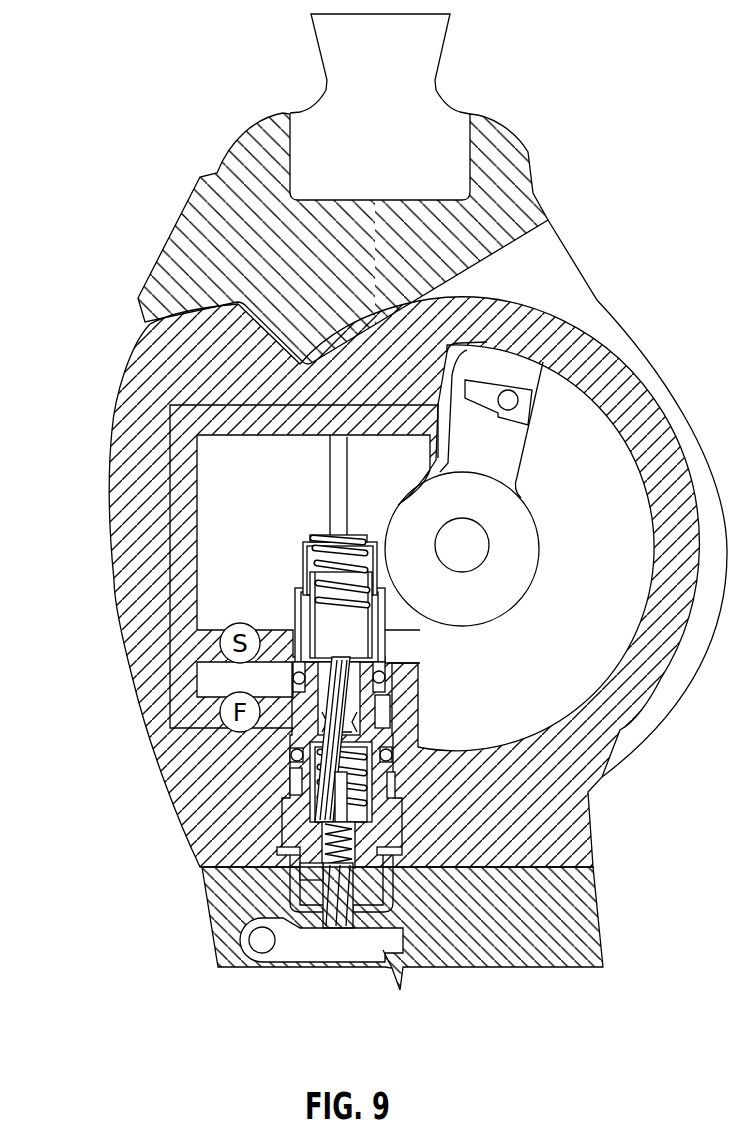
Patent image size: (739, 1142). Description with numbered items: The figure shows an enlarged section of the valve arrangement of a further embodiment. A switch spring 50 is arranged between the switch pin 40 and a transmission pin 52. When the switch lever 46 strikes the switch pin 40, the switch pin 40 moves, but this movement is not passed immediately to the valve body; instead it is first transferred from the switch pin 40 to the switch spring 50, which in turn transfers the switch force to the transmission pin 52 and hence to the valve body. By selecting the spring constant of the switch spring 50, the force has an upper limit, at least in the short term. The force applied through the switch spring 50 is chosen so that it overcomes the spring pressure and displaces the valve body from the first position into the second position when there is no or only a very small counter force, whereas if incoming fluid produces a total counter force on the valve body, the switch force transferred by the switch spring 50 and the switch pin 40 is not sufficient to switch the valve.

The transmission pin 52 is at (327, 687).
The switch pin 40 is at (328, 878).
The switch lever 46 is at (337, 925).
The switch spring 50 is at (364, 858).